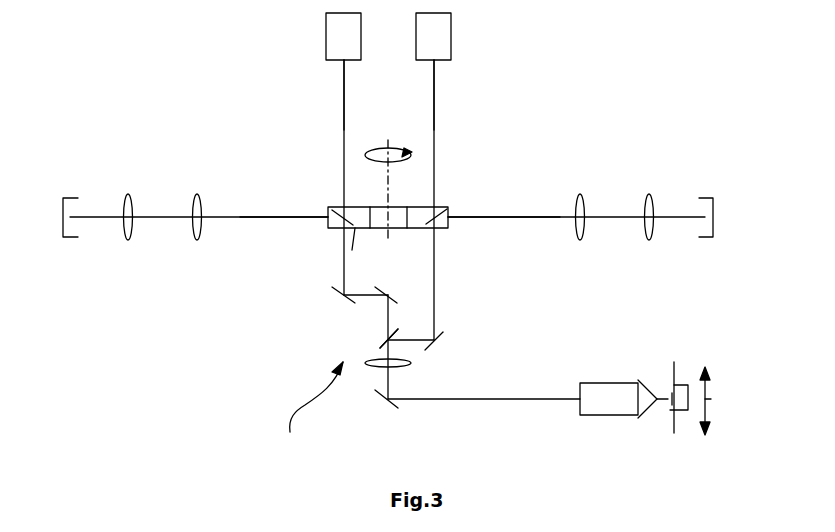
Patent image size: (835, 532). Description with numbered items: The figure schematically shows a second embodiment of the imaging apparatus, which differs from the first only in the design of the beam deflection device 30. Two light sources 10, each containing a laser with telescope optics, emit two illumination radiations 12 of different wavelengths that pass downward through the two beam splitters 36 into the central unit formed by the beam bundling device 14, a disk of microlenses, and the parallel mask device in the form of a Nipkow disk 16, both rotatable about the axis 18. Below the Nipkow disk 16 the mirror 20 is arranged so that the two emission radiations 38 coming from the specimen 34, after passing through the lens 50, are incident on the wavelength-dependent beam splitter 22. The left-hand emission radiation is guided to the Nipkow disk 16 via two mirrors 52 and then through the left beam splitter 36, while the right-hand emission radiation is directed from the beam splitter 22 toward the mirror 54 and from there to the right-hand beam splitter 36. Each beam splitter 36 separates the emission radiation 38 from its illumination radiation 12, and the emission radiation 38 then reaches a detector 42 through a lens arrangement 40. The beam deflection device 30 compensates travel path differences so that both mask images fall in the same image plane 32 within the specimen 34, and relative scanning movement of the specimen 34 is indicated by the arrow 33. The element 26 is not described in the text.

The light source 10 is at (333, 42).
The illumination radiation 12 is at (344, 104).
The beam bundling device 14 is at (418, 208).
The Nipkow disk 16 is at (355, 230).
The axis 18 is at (388, 142).
The mirror 20 is at (398, 407).
The beam splitter 22 is at (378, 347).
The detector 26 is at (598, 405).
The beam deflection device 30 is at (307, 409).
The image plane 32 is at (676, 372).
The arrow 33 is at (711, 399).
The specimen 34 is at (681, 410).
The beam splitter 36 is at (347, 216).
The emission radiation 38 is at (255, 217).
The lens arrangement 40 is at (197, 197).
The detector 42 is at (63, 206).
The lens 50 is at (410, 363).
The mirror 52 is at (335, 290).
The mirror 54 is at (442, 340).